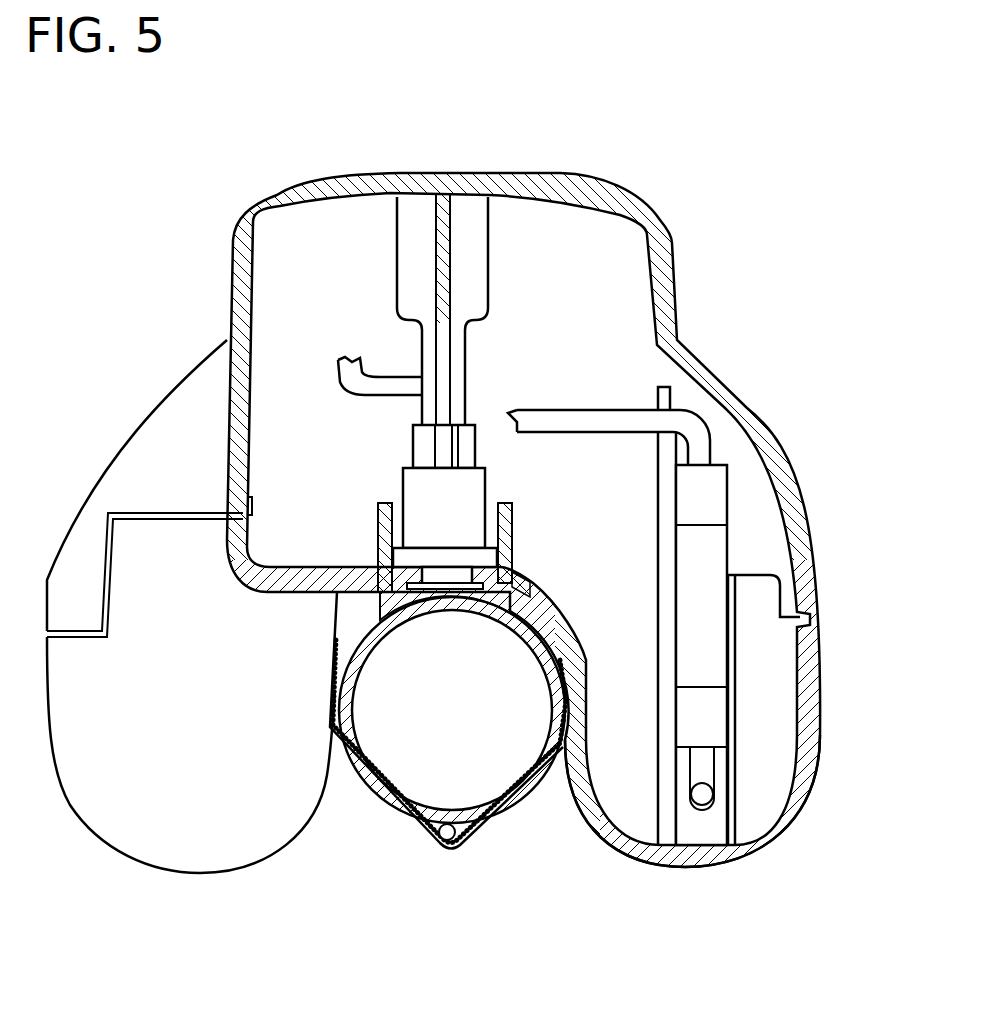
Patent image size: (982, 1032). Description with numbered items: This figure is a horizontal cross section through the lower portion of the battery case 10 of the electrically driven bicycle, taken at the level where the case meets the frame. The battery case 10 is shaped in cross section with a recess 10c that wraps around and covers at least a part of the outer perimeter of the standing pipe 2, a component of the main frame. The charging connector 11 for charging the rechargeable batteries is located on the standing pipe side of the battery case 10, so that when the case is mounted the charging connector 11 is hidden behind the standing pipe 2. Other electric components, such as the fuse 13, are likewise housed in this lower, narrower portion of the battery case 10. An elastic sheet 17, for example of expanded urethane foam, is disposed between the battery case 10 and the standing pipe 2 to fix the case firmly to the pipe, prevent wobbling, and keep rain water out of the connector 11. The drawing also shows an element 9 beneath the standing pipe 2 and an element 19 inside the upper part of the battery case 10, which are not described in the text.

The standing pipe 2 is at (480, 822).
The wire 9 is at (443, 840).
The battery case 10 is at (757, 406).
The recess 10c is at (572, 810).
The charging connector 11 is at (457, 500).
The fuse 13 is at (705, 553).
The elastic sheet 17 is at (410, 595).
The cable guide 19 is at (470, 250).